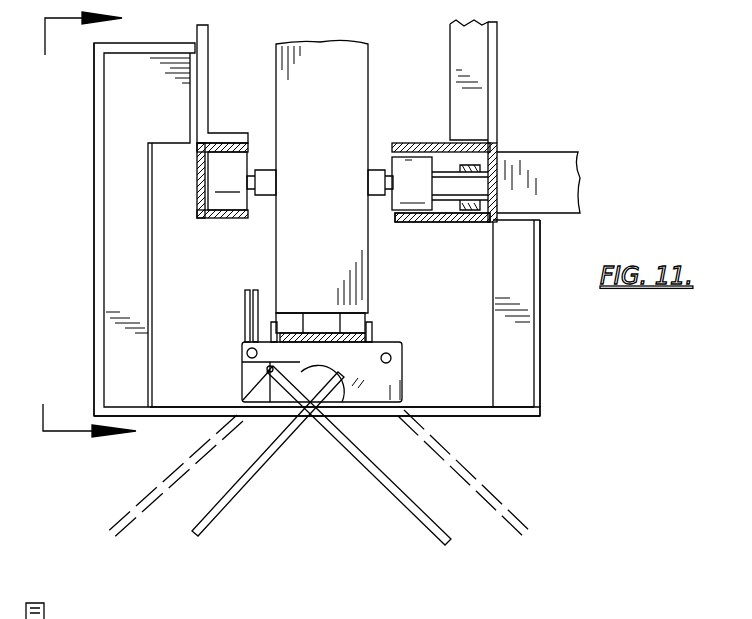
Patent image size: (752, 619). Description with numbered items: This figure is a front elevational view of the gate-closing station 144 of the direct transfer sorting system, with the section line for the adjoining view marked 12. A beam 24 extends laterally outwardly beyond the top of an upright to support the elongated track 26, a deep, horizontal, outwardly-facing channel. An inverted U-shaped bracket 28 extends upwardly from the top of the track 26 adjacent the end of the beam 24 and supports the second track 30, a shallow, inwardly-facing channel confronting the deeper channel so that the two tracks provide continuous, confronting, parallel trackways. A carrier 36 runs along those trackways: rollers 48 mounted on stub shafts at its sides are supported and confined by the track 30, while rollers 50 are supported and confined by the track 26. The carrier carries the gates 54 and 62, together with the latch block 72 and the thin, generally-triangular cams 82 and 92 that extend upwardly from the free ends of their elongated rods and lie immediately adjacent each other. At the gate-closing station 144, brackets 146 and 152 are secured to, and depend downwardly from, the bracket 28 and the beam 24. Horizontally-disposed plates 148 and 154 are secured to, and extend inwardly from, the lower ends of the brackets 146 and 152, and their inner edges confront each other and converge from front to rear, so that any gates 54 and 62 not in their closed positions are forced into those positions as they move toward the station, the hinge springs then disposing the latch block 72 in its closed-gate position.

The section line 12- 12 is at (106, 226).
The beam 24 is at (536, 152).
The track 26 is at (406, 222).
The inverted U-shaped bracket 28 is at (208, 57).
The second track 30 is at (206, 222).
The carrier 36 is at (348, 79).
The roller 48 is at (243, 201).
The roller 50 is at (415, 147).
The gate 54 is at (128, 522).
The gate 62 is at (227, 513).
The latch block 72 is at (403, 360).
The cam 82 is at (257, 290).
The cam 92 is at (245, 305).
The gate-closing station 144 is at (548, 406).
The bracket 146 is at (105, 305).
The plate 148 is at (178, 407).
The bracket 152 is at (541, 356).
The plate 154 is at (432, 406).